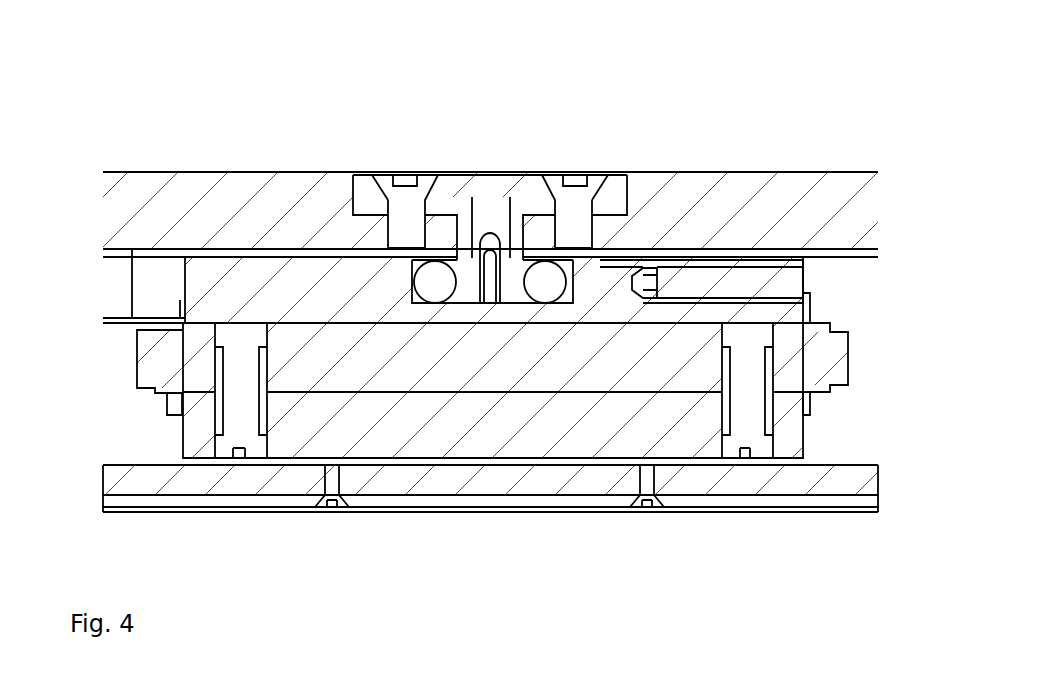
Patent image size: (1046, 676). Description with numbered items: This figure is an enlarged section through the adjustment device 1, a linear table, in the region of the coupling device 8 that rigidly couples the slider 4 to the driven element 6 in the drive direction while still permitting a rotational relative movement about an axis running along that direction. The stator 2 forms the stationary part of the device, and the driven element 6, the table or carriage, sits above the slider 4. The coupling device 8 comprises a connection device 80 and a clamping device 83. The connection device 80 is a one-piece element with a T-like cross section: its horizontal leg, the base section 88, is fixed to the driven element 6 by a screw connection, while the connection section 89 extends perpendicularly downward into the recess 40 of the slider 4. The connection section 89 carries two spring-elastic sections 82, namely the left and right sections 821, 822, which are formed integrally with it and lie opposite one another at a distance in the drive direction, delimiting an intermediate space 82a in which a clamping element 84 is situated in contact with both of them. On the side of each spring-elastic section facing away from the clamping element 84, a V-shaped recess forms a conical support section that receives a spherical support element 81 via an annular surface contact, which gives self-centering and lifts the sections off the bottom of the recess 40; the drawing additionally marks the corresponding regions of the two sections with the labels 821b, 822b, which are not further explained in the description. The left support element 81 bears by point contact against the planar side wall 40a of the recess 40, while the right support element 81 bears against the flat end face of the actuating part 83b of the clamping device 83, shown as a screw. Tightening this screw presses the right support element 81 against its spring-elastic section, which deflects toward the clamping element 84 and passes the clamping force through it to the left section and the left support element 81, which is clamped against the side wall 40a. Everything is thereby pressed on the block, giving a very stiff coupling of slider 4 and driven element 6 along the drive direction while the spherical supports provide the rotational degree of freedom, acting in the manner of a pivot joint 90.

The adjustment device 1 is at (202, 110).
The stator 2 is at (287, 477).
The slider 4 is at (213, 287).
The driven element 6 is at (763, 200).
The coupling device 8 is at (492, 157).
The connection device 80 is at (490, 233).
The support element 81 is at (437, 277).
The spring-elastic section 82 is at (470, 252).
The intermediate space 82a is at (510, 253).
The base section 88 is at (472, 252).
The recess 40 is at (565, 262).
The side wall 40a is at (418, 268).
The pivot joint 90 is at (412, 302).
The connection section 89 is at (465, 310).
The spring-elastic section 821 is at (520, 303).
The first contact surface 821b is at (508, 297).
The spring-elastic section 822 is at (492, 290).
The second contact surface 822b is at (452, 280).
The clamping device 83 is at (597, 300).
The actuating part 83b is at (618, 290).
The clamping element 84 is at (512, 305).